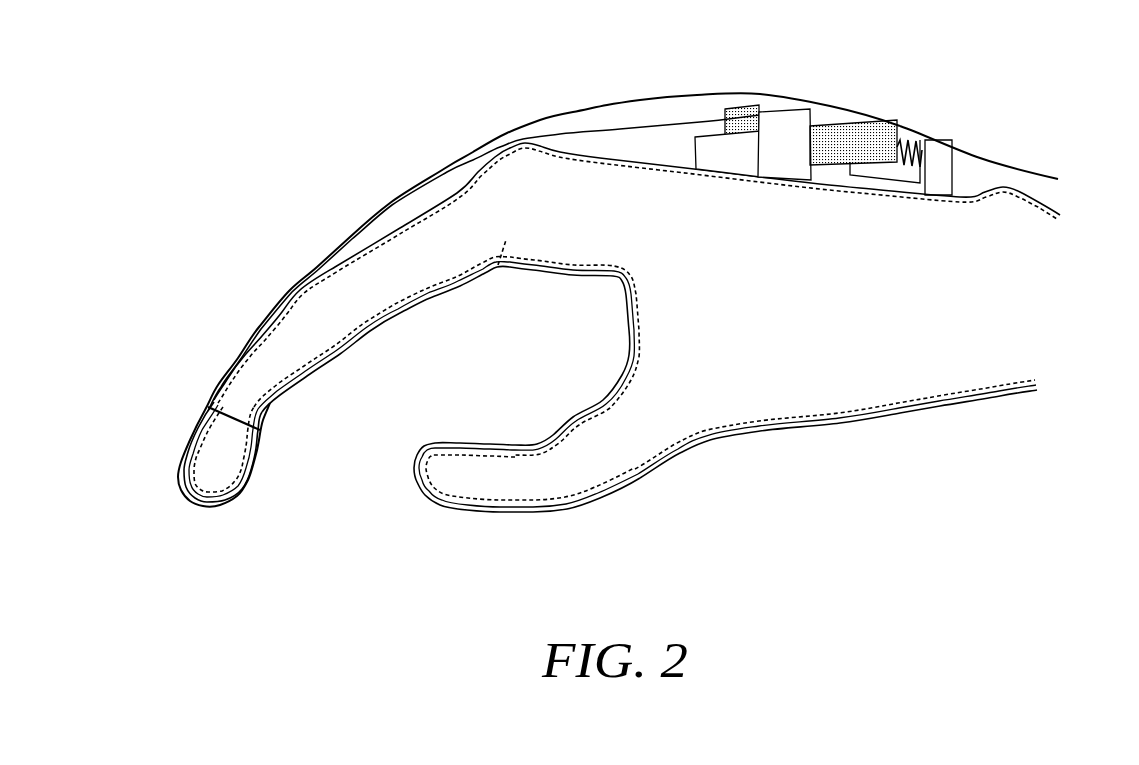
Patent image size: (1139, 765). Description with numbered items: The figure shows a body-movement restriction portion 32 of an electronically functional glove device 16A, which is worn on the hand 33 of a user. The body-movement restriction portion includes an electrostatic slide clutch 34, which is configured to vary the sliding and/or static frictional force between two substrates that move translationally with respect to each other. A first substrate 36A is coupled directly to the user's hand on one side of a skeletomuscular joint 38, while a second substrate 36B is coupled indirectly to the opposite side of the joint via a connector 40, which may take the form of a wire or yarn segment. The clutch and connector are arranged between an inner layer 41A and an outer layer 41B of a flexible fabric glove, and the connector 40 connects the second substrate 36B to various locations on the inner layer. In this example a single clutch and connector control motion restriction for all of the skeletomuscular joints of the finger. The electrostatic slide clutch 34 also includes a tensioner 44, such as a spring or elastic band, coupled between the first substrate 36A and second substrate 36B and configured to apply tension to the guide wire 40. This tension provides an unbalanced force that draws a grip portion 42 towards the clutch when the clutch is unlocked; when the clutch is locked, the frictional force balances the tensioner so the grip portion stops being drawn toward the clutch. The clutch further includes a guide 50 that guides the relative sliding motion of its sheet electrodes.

The electronically functional glove device 16A is at (824, 557).
The body-movement restriction portion 32 is at (310, 113).
The hand 33 is at (615, 271).
The electrostatic slide clutch 34 is at (1003, 121).
The first substrate 36A is at (708, 166).
The second substrate 36B is at (831, 152).
The skeletomuscular joint 38 is at (514, 300).
The connector 40 is at (620, 130).
The inner layer 41A is at (275, 333).
The outer layer 41B is at (415, 470).
The grip portion 42 is at (274, 442).
The tensioner 44 is at (912, 140).
The guide 50 is at (797, 156).